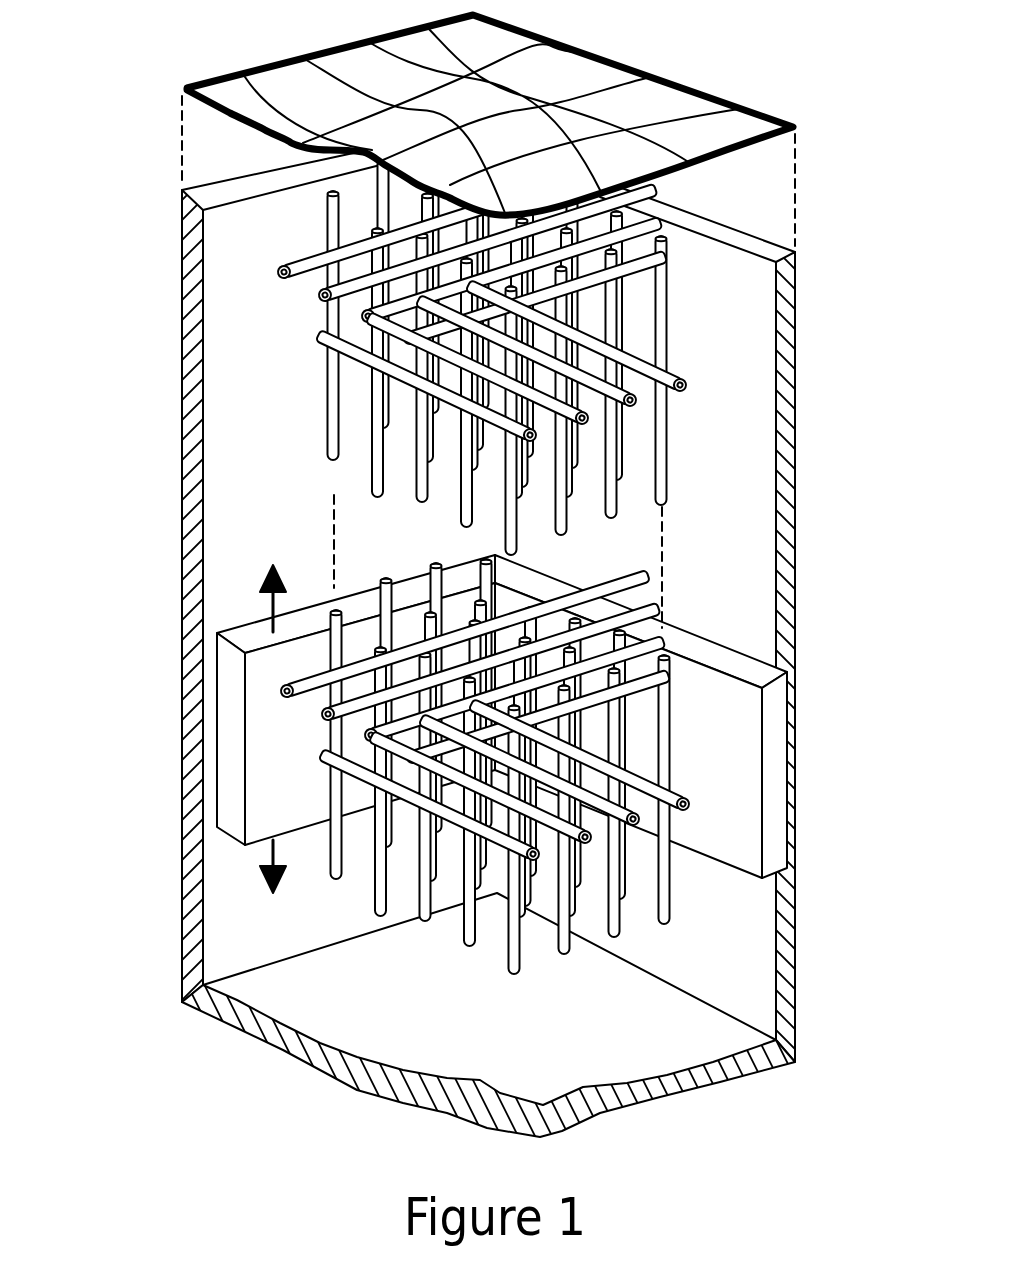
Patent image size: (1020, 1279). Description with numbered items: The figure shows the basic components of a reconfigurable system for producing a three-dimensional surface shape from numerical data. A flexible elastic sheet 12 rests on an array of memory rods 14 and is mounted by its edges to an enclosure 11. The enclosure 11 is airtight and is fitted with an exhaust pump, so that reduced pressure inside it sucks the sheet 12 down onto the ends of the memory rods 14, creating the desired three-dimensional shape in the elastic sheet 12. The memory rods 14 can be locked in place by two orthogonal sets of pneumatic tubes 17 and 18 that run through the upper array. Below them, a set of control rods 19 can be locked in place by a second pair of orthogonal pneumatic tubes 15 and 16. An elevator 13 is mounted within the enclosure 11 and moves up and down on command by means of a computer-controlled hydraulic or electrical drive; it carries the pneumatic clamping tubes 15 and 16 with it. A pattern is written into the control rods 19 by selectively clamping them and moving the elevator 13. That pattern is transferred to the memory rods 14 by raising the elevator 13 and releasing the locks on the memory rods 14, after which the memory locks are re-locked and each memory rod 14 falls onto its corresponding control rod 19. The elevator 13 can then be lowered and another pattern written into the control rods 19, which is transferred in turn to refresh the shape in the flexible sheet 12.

The enclosure 11 is at (800, 1000).
The flexible elastic sheet 12 is at (632, 78).
The elevator 13 is at (232, 720).
The memory rods 14 is at (668, 305).
The pneumatic tubes 15 is at (412, 772).
The pneumatic tubes 16 is at (540, 856).
The pneumatic tubes 17 is at (407, 348).
The pneumatic tubes 18 is at (540, 440).
The control rods 19 is at (668, 742).